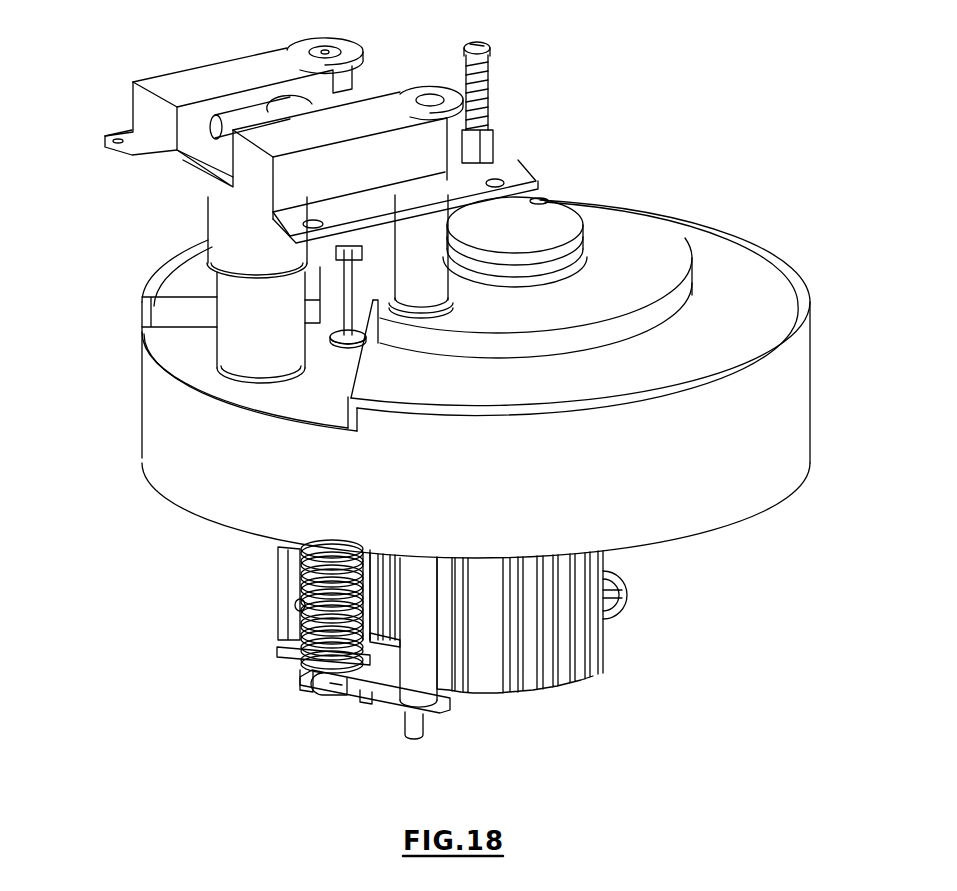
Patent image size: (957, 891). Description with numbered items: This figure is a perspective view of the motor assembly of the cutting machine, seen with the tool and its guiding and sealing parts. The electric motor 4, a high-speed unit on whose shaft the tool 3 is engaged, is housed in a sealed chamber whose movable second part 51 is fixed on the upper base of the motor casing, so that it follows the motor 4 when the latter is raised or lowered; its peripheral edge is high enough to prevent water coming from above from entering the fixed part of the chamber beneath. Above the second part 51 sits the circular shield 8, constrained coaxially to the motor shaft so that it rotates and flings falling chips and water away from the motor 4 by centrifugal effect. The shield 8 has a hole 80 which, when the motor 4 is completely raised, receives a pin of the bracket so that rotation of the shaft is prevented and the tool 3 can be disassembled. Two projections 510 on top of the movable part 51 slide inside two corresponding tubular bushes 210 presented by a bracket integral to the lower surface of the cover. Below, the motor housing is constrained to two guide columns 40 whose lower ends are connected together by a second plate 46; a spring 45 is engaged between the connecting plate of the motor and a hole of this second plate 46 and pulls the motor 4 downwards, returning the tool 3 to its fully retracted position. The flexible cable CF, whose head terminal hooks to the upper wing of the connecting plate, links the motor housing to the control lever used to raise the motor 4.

The tool 3 is at (497, 82).
The hole 80 is at (543, 200).
The circular shield 8 is at (537, 223).
The second part of the sealed chamber 51 is at (742, 257).
The tubular bushes 210 is at (233, 223).
The flexible cable CF is at (340, 297).
The projections 510 is at (235, 352).
The spring 45 is at (330, 627).
The second plate 46 is at (440, 713).
The guide columns 40 is at (417, 674).
The electric motor 4 is at (583, 637).